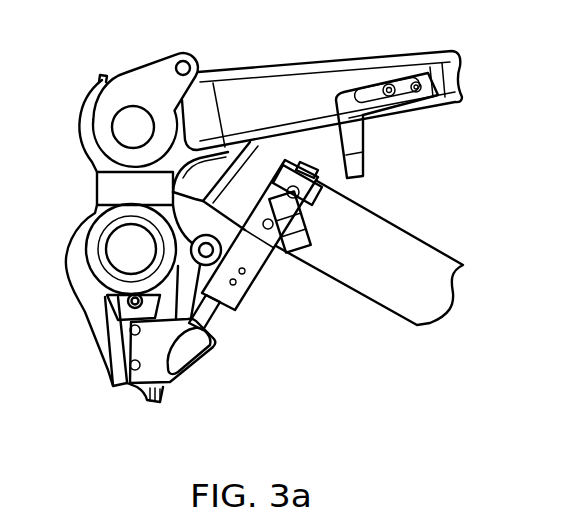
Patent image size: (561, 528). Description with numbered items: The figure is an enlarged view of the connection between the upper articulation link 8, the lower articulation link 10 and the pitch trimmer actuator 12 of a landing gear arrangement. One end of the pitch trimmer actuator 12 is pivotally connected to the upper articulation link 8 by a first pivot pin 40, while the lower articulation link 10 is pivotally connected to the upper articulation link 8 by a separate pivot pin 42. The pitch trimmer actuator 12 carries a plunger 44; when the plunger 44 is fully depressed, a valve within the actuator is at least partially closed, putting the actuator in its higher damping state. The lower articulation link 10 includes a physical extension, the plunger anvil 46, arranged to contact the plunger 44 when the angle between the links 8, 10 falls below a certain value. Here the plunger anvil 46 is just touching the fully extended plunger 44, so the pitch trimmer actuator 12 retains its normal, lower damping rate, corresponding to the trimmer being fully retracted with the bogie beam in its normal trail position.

The upper articulation link 8 is at (300, 98).
The lower articulation link 10 is at (92, 290).
The pitch trimmer actuator 12 is at (388, 292).
The first pivot pin 40 is at (125, 127).
The pivot pin 42 is at (118, 249).
The plunger 44 is at (220, 317).
The plunger anvil 46 is at (188, 355).